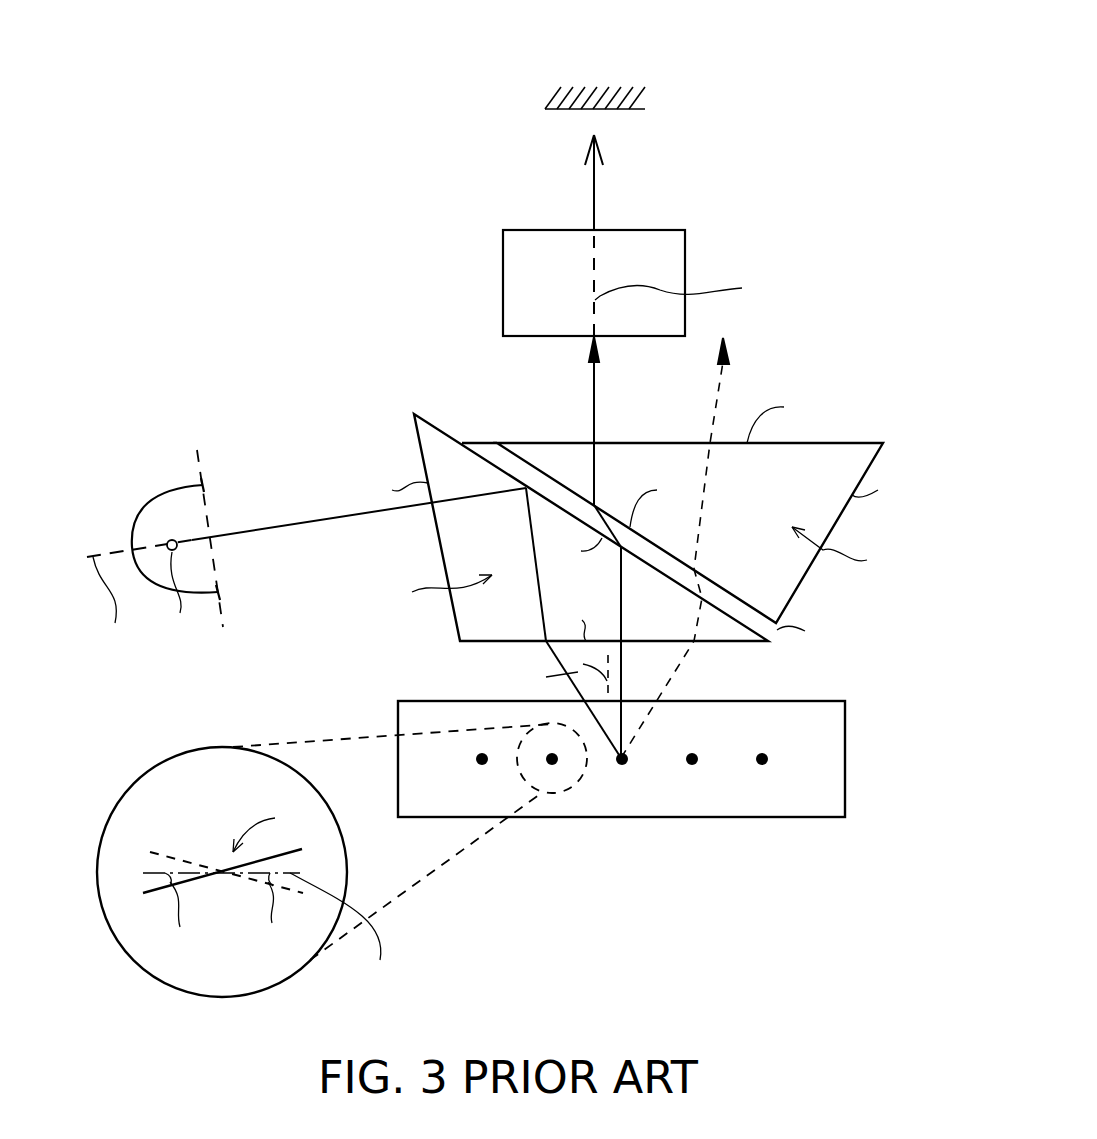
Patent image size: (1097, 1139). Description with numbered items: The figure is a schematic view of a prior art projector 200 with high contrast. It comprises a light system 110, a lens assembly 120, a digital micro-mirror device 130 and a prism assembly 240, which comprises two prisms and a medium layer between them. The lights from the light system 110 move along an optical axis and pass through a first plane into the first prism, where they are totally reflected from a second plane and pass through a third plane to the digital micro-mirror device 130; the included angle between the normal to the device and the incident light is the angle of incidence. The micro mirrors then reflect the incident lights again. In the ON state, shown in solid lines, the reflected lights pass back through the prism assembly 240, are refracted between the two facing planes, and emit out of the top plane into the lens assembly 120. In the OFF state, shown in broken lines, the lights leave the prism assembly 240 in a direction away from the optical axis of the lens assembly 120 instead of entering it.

The projector 200 is at (748, 57).
The light system 110 is at (163, 489).
The lens assembly 120 is at (666, 230).
The digital micro-mirror device (DMD) 130 is at (823, 701).
The prism assembly 240 is at (836, 440).